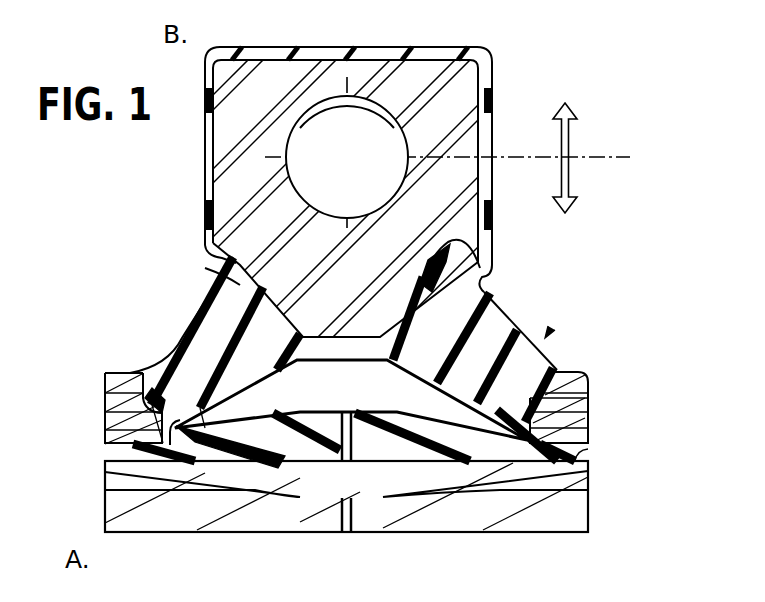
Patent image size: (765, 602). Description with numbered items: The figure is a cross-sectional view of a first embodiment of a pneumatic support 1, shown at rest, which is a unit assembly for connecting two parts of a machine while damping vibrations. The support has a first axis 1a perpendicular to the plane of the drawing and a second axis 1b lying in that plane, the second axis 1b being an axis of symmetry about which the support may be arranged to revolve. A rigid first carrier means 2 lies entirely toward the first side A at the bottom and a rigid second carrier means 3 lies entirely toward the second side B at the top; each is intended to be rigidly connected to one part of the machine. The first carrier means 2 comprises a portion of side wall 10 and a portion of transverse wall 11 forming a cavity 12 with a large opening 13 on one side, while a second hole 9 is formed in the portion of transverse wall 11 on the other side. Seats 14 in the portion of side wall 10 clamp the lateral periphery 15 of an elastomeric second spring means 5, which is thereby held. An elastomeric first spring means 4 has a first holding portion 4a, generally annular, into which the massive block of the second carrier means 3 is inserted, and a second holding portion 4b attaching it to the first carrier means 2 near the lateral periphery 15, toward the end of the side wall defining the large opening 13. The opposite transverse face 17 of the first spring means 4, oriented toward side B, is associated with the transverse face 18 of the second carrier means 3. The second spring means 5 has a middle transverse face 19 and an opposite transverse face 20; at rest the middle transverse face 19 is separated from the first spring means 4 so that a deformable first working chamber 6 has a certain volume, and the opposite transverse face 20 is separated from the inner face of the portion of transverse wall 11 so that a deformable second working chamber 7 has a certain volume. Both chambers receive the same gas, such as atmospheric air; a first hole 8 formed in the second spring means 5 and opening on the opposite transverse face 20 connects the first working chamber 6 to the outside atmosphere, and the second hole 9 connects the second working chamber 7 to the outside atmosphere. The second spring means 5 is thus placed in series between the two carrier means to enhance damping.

The pneumatic support 1 is at (546, 336).
The first axis 1a is at (350, 152).
The second axis 1b is at (345, 94).
The first carrier means 2 is at (568, 506).
The second carrier means 3 is at (462, 92).
The first spring means 4 is at (185, 388).
The first holding portion 4a is at (208, 194).
The second holding portion 4b is at (548, 393).
The second spring means 5 is at (237, 445).
The first working chamber 6 is at (351, 400).
The second working chamber 7 is at (346, 481).
The first hole 8 is at (335, 430).
The second hole 9 is at (350, 518).
The portion of side wall 10 is at (577, 423).
The portion of transverse wall 11 is at (300, 518).
The cavity 12 is at (440, 403).
The large opening 13 is at (271, 447).
The seats 14 is at (582, 456).
The lateral periphery 15 is at (120, 456).
The opposite transverse face 17 is at (458, 236).
The transverse face 18 is at (228, 270).
The middle transverse face 19 is at (213, 356).
The opposite transverse face 20 is at (437, 465).